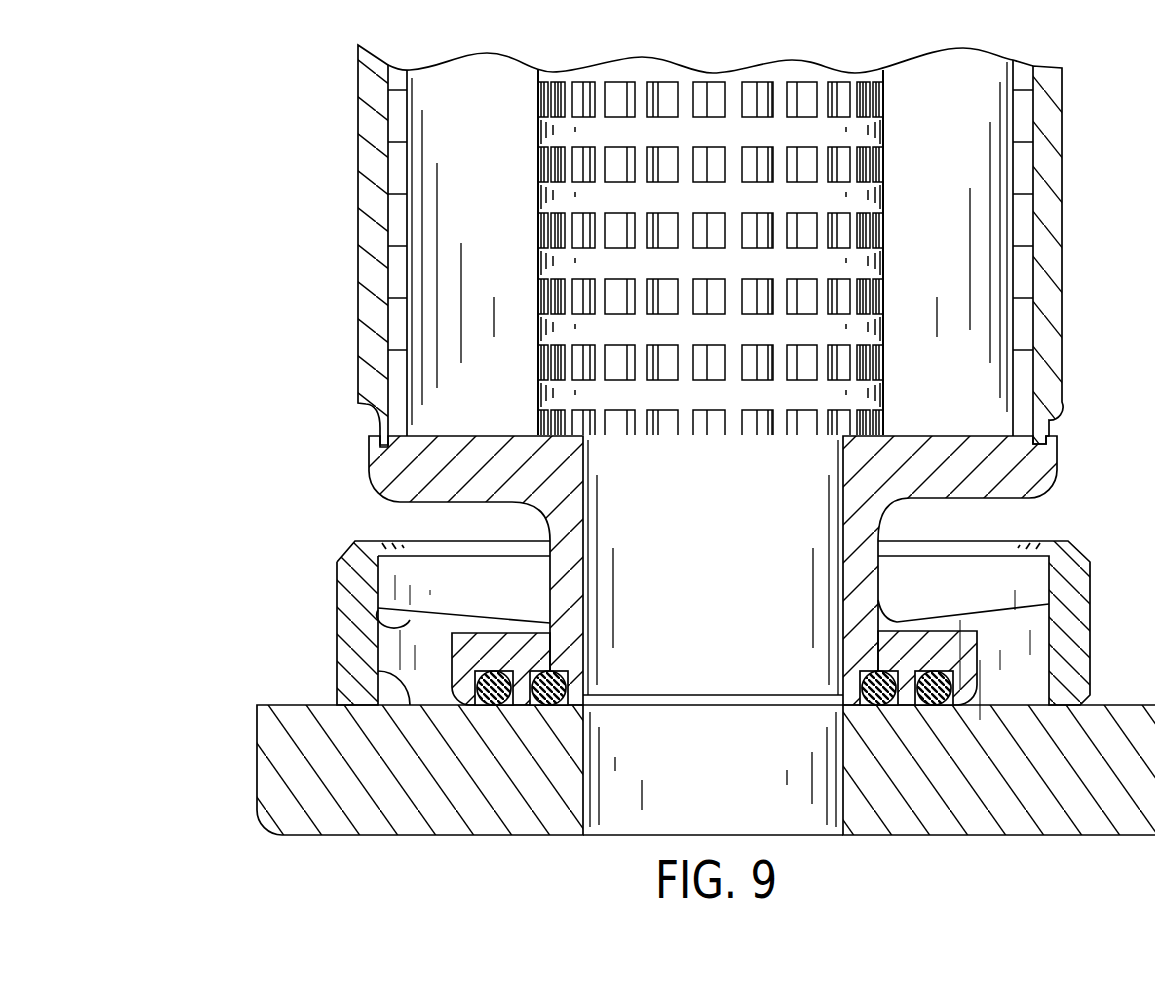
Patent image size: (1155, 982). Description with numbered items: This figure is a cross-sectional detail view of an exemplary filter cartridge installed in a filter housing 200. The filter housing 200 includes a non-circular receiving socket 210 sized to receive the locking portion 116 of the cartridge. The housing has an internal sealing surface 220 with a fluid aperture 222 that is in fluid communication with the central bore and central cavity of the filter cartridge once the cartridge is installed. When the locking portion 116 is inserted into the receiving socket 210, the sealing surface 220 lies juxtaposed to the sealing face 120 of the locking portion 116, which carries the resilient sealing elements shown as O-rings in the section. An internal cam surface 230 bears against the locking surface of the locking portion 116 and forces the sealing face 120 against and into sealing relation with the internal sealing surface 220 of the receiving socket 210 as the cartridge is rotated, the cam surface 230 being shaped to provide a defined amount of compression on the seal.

The filter housing 200 is at (168, 787).
The receiving socket 210 is at (338, 640).
The internal sealing surface 220 is at (378, 668).
The internal cam surface 230 is at (338, 594).
The fluid aperture 222 is at (683, 696).
The sealing face 120 is at (903, 706).
The locking portion 116 is at (992, 658).